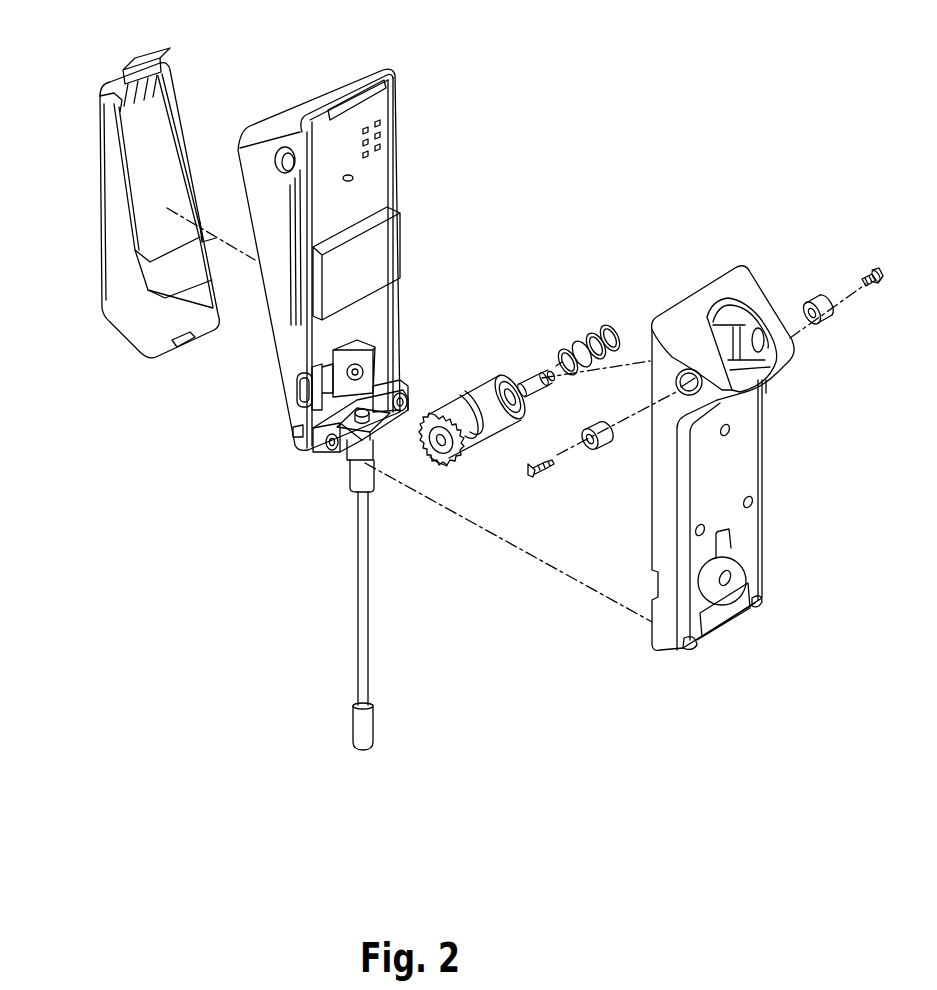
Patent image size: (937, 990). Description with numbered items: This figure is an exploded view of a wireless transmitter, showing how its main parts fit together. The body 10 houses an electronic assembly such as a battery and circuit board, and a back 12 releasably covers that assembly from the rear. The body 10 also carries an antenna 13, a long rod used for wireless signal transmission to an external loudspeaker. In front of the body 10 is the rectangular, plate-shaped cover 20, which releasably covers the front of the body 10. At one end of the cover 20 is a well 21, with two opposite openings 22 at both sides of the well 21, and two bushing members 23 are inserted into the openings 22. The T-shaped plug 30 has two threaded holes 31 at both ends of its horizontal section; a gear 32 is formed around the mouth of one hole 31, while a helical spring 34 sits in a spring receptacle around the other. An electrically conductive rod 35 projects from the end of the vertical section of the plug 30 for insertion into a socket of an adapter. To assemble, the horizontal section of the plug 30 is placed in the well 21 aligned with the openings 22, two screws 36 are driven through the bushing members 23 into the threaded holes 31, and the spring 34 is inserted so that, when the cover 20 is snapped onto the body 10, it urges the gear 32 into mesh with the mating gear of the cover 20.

The body 10 is at (320, 100).
The back 12 is at (123, 312).
The antenna 13 is at (362, 600).
The cover 20 is at (738, 481).
The well 21 is at (783, 372).
The openings 22 is at (650, 358).
The bushing members 23 is at (815, 302).
The plug 30 is at (463, 405).
The threaded holes 31 is at (443, 463).
The gear 32 is at (425, 447).
The helical spring 34 is at (580, 345).
The electrically conductive rod 35 is at (521, 368).
The screws 36 is at (868, 268).